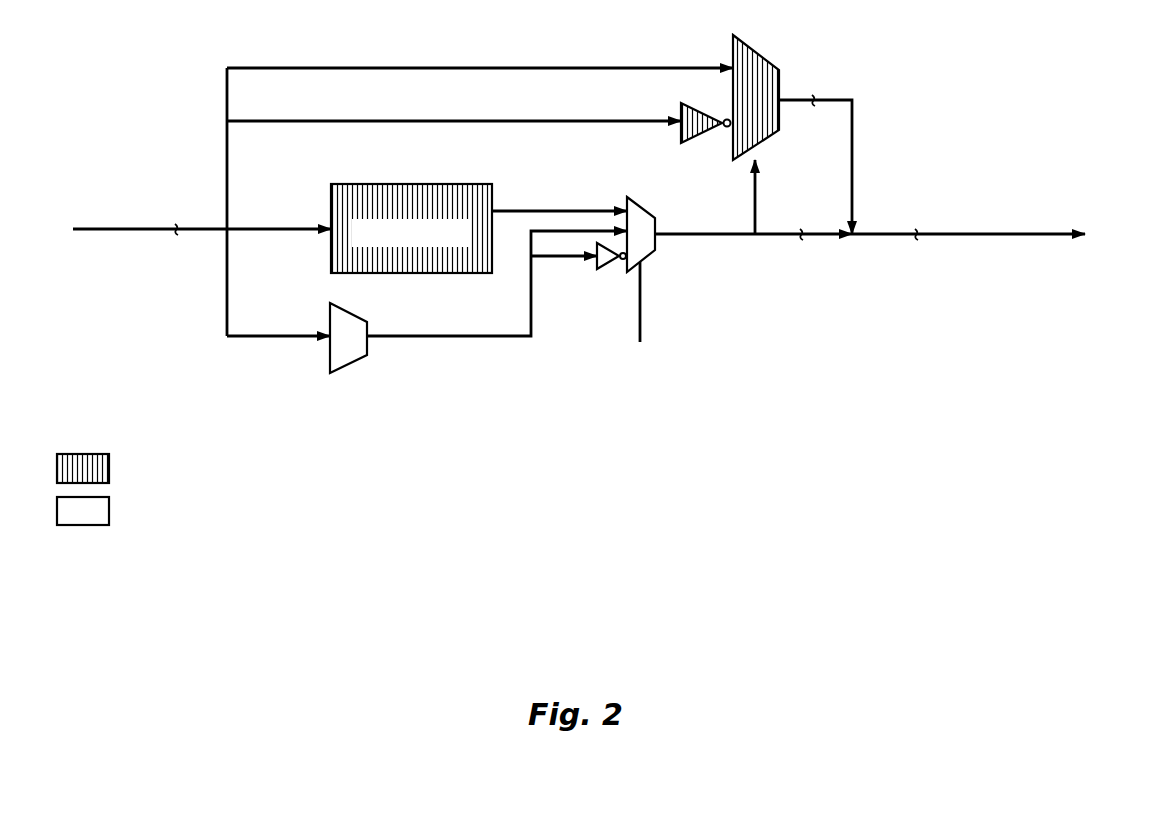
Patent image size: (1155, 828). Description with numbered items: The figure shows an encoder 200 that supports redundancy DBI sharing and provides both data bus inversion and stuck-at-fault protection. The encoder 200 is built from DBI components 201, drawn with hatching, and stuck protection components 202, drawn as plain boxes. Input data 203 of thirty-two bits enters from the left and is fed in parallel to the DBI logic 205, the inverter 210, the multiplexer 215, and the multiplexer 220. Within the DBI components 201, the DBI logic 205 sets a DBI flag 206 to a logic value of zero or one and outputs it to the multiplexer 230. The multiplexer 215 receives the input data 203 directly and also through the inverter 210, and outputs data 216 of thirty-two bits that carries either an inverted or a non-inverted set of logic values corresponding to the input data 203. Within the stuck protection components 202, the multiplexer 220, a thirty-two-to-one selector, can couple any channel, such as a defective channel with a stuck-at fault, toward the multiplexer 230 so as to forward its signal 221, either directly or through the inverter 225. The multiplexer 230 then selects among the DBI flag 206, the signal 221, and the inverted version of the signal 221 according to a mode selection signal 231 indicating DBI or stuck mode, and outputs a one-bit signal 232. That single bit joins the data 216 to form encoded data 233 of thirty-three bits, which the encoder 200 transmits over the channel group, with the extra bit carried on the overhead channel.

The encoder 200 is at (1018, 636).
The DBI components 201 is at (201, 470).
The stuck protection components 202 is at (268, 512).
The input data 203 is at (112, 229).
The DBI logic 205 is at (400, 184).
The DBI flag 206 is at (542, 210).
The inverter 210 is at (681, 110).
The multiplexer 215 is at (730, 50).
The data 216 is at (853, 155).
The multiplexer 220 is at (328, 324).
The signal 221 is at (458, 336).
The inverter 225 is at (600, 266).
The multiplexer 230 is at (648, 258).
The mode selection signal 231 is at (641, 308).
The signal 232 is at (708, 232).
The encoded data 233 is at (985, 233).